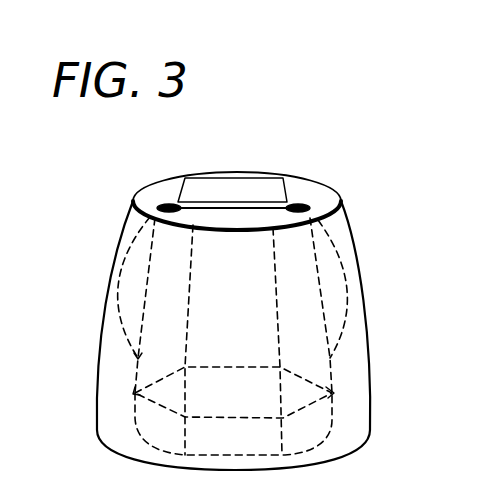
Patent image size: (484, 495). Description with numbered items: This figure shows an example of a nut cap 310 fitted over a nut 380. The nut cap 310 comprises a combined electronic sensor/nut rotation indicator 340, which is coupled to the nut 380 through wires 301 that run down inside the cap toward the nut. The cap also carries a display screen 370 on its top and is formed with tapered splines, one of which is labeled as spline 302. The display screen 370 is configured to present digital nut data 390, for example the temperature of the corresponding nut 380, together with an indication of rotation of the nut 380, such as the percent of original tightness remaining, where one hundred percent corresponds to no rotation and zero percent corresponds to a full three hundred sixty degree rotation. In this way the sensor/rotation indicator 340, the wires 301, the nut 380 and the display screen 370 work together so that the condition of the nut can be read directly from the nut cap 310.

The wires 301 is at (329, 235).
The tapered spline 302 is at (275, 276).
The nut cap 310 is at (110, 257).
The combined electronic sensor/nut rotation indicator 340 is at (160, 207).
The display screen 370 is at (220, 177).
The nut 380 is at (135, 408).
The digital nut data 390 is at (281, 190).